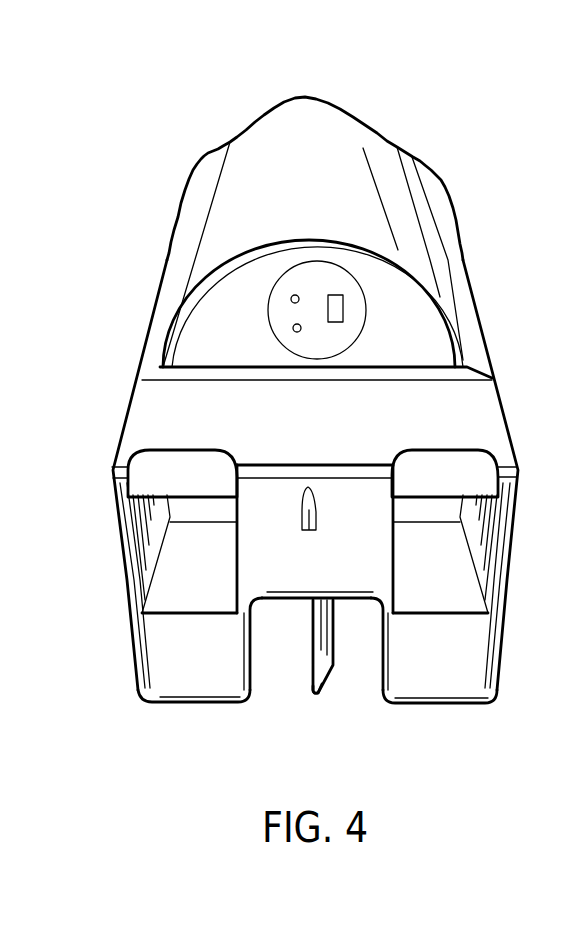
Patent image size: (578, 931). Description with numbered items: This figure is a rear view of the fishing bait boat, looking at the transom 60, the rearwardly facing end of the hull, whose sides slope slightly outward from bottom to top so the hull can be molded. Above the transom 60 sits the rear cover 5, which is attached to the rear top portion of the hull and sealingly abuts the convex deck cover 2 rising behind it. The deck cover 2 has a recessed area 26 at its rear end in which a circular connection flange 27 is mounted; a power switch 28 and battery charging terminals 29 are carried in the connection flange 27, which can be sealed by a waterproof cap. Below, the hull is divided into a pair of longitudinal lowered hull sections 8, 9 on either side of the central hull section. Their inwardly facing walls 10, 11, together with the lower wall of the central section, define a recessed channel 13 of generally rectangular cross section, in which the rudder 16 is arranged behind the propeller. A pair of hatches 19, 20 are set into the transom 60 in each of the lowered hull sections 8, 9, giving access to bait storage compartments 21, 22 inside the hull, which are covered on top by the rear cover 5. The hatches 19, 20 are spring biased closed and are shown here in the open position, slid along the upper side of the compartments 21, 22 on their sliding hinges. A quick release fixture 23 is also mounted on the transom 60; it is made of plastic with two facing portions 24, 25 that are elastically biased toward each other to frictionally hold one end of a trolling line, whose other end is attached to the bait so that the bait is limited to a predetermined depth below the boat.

The deck cover 2 is at (360, 137).
The rear cover 5 is at (483, 402).
The lowered hull section 8 is at (172, 690).
The lowered hull section 9 is at (447, 687).
The inwardly facing wall 10 is at (250, 670).
The inwardly facing wall 11 is at (378, 677).
The recessed channel 13 is at (350, 647).
The rudder 16 is at (318, 692).
The hatch 19 is at (152, 467).
The hatch 20 is at (477, 470).
The bait storage compartment 21 is at (182, 590).
The bait storage compartment 22 is at (440, 587).
The quick release fixture 23 is at (315, 497).
The facing portion 24 is at (302, 513).
The facing portion 25 is at (320, 518).
The recessed area 26 is at (418, 340).
The connection flange 27 is at (297, 283).
The power switch 28 is at (343, 302).
The battery charging terminals 29 is at (291, 301).
The transom 60 is at (503, 553).